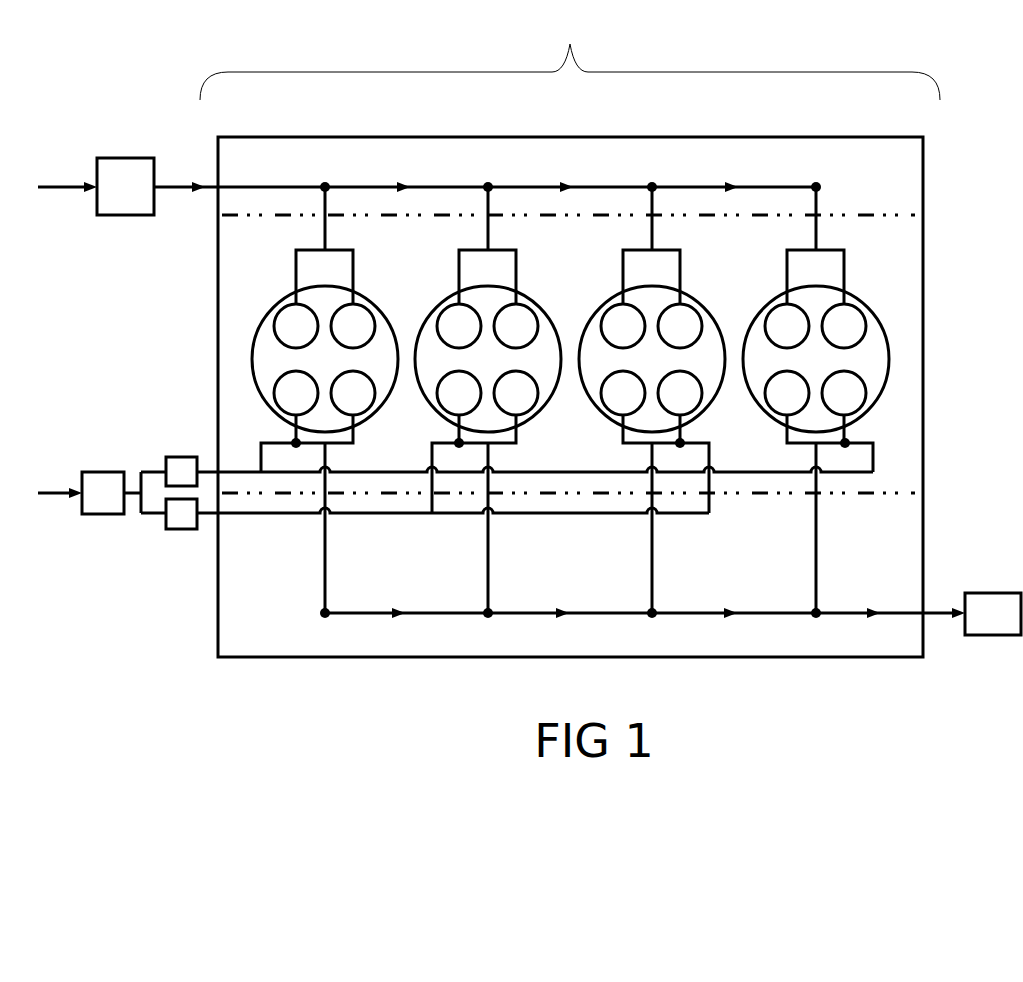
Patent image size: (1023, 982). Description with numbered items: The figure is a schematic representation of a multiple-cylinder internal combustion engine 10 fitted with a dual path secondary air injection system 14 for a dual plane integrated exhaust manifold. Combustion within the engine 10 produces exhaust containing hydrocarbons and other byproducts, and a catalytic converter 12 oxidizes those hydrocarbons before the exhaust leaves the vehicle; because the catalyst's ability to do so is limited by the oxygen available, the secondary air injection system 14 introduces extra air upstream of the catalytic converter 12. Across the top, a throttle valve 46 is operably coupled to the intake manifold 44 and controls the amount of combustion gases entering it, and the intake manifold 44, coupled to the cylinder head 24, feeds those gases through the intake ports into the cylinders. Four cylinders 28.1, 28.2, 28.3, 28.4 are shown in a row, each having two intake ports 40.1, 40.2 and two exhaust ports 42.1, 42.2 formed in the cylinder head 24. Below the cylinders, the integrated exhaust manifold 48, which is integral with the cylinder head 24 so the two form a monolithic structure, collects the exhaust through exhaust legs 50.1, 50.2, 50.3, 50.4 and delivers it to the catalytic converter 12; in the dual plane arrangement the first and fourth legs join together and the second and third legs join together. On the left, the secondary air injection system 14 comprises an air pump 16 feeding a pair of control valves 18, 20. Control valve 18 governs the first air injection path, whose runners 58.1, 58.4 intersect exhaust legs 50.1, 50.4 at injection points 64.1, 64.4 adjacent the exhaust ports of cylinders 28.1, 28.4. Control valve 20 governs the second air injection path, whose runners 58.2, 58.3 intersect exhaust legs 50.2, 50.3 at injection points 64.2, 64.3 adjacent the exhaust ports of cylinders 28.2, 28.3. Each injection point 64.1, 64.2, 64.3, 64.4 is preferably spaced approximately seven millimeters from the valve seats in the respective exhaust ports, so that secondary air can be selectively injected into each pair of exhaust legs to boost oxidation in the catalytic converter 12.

The engine 10 is at (570, 55).
The catalytic converter 12 is at (993, 614).
The secondary air injection (SAIR) system 14 is at (186, 549).
The air pump 16 is at (102, 493).
The control valve 18 is at (519, 471).
The control valve 20 is at (437, 514).
The cylinder head 24 is at (239, 264).
The cylinder 28.1 is at (325, 315).
The cylinder 28.2 is at (488, 315).
The cylinder 28.3 is at (652, 315).
The cylinder 28.4 is at (816, 315).
The intake port 40.1 is at (541, 326).
The intake port 40.2 is at (598, 326).
The exhaust port 42.1 is at (541, 393).
The exhaust port 42.2 is at (598, 393).
The intake manifold 44 is at (239, 174).
The throttle valve 46 is at (96, 186).
The integrated exhaust manifold 48 is at (241, 612).
The exhaust leg 50.1 is at (327, 584).
The exhaust leg 50.2 is at (490, 584).
The exhaust leg 50.3 is at (655, 584).
The exhaust leg 50.4 is at (819, 584).
The runner 58.1 is at (260, 453).
The runner 58.2 is at (390, 515).
The runner 58.3 is at (682, 515).
The runner 58.4 is at (846, 474).
The injection point 64.1 is at (294, 441).
The injection point 64.2 is at (457, 441).
The injection point 64.3 is at (682, 441).
The injection point 64.4 is at (847, 441).